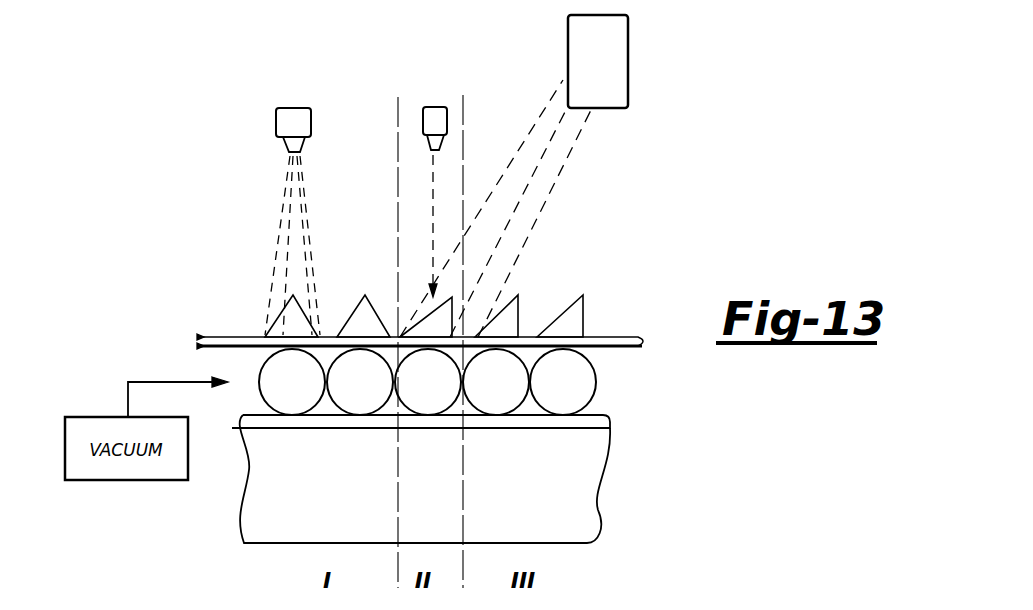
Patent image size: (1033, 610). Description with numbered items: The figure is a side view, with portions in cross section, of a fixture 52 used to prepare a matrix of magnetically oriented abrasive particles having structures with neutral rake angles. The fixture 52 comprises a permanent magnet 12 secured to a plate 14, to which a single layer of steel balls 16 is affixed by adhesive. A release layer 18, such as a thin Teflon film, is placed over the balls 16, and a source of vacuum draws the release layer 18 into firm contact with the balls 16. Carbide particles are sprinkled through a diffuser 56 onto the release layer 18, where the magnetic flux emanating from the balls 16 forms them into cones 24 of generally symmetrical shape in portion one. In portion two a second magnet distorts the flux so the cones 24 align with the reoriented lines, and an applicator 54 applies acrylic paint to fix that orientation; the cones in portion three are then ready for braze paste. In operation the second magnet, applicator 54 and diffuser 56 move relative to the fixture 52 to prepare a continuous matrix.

The permanent magnet 12 is at (333, 476).
The plate 14 is at (612, 421).
The steel balls 16 is at (568, 385).
The release layer 18 is at (205, 333).
The cones 24 is at (588, 318).
The fixture 52 is at (657, 478).
The applicator 54 is at (440, 105).
The diffuser 56 is at (293, 107).